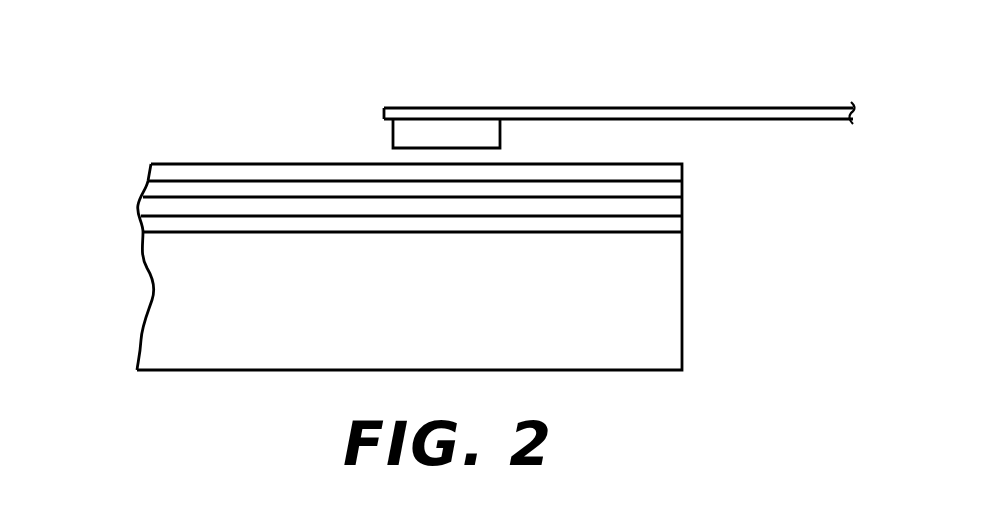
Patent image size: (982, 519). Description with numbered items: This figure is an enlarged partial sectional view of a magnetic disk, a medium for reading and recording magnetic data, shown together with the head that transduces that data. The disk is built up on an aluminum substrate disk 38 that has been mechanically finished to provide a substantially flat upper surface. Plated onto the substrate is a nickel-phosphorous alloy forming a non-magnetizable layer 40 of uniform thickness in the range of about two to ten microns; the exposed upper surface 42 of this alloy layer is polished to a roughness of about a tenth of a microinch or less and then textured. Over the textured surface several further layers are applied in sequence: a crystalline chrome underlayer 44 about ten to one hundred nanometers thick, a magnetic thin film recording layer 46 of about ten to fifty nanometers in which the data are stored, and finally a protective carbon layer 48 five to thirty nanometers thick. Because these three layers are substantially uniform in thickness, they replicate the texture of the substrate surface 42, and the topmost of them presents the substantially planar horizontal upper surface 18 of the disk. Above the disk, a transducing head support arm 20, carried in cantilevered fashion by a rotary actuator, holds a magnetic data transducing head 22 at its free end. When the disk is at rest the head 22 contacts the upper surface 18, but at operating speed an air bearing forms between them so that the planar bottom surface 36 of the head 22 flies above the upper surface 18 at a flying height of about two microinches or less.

The upper surface 18 is at (222, 162).
The transducing head support arm 20 is at (792, 108).
The magnetic data transducing head 22 is at (393, 127).
The planar bottom surface 36 is at (477, 148).
The aluminum substrate disk 38 is at (662, 330).
The non-magnetizable layer 40 is at (597, 223).
The upper surface of the Ni—P alloy layer 42 is at (660, 217).
The chrome underlayer 44 is at (148, 205).
The magnetic thin film recording layer 46 is at (670, 193).
The protective carbon layer 48 is at (170, 172).